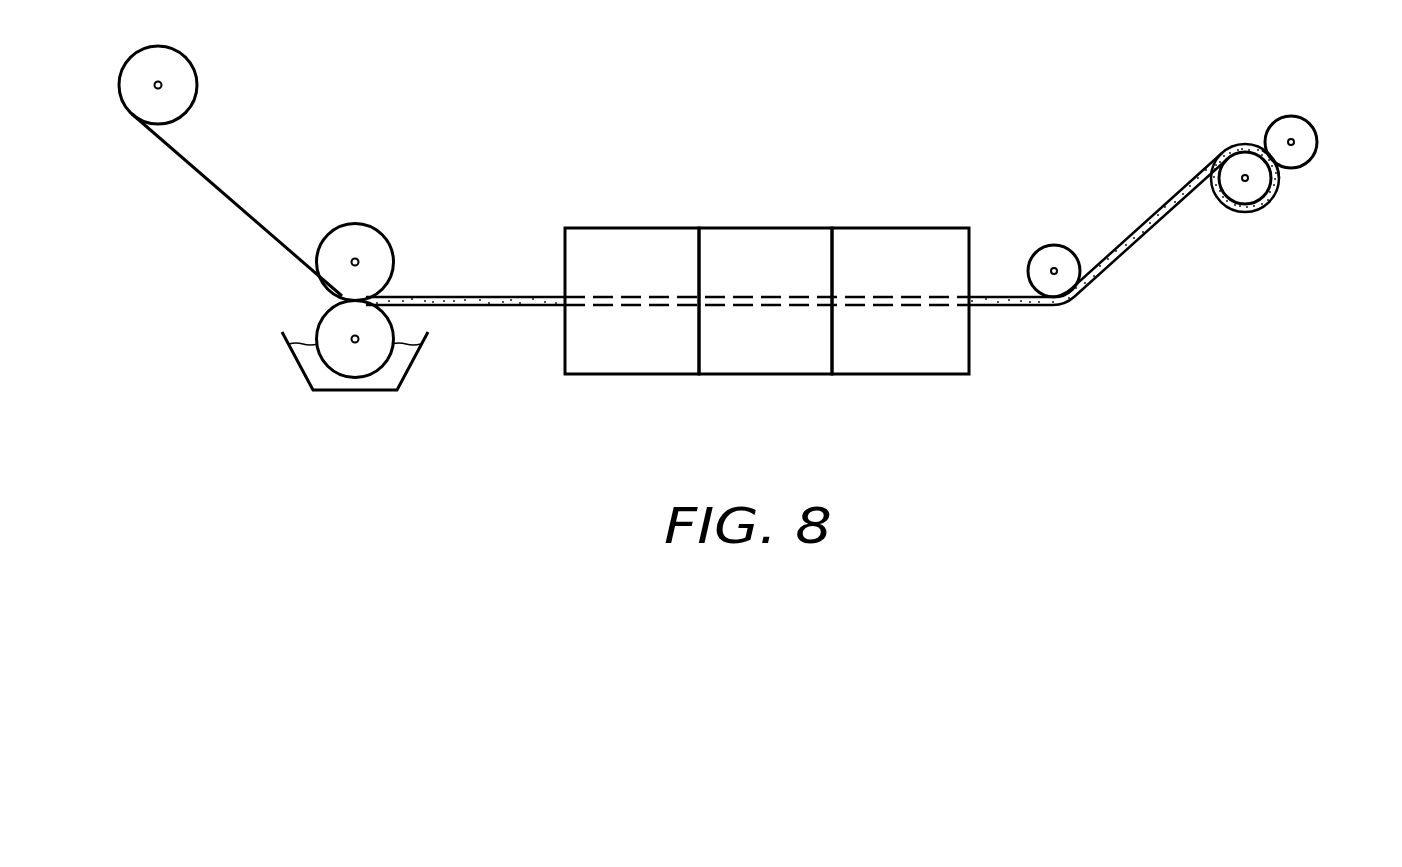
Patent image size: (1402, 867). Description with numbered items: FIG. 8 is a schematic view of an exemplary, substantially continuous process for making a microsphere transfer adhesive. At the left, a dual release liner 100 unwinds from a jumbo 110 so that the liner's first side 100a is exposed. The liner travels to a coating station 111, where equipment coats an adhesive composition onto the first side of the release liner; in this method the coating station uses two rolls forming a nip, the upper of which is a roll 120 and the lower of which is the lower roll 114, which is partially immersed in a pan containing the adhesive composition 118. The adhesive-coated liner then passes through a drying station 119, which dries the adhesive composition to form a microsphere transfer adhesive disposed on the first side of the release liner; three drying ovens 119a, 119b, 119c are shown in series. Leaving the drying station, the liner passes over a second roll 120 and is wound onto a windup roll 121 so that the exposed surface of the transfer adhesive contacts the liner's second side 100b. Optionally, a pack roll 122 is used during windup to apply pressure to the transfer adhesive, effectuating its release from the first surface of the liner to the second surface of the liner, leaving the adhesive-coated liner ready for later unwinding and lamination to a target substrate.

The dual release liner 100 is at (130, 127).
The first side of the liner 100a is at (177, 157).
The coated web 100b is at (1281, 171).
The jumbo 110 is at (180, 66).
The coating station 111 is at (270, 363).
The lower roll 114 is at (357, 366).
The adhesive composition 118 is at (395, 372).
The drying station 119 is at (767, 298).
The drying oven 119a is at (633, 360).
The drying oven 119b is at (763, 360).
The drying oven 119c is at (891, 360).
The guide roller 120 is at (358, 234).
The wind-up roller 121 is at (1237, 164).
The pack roll 122 is at (1294, 128).